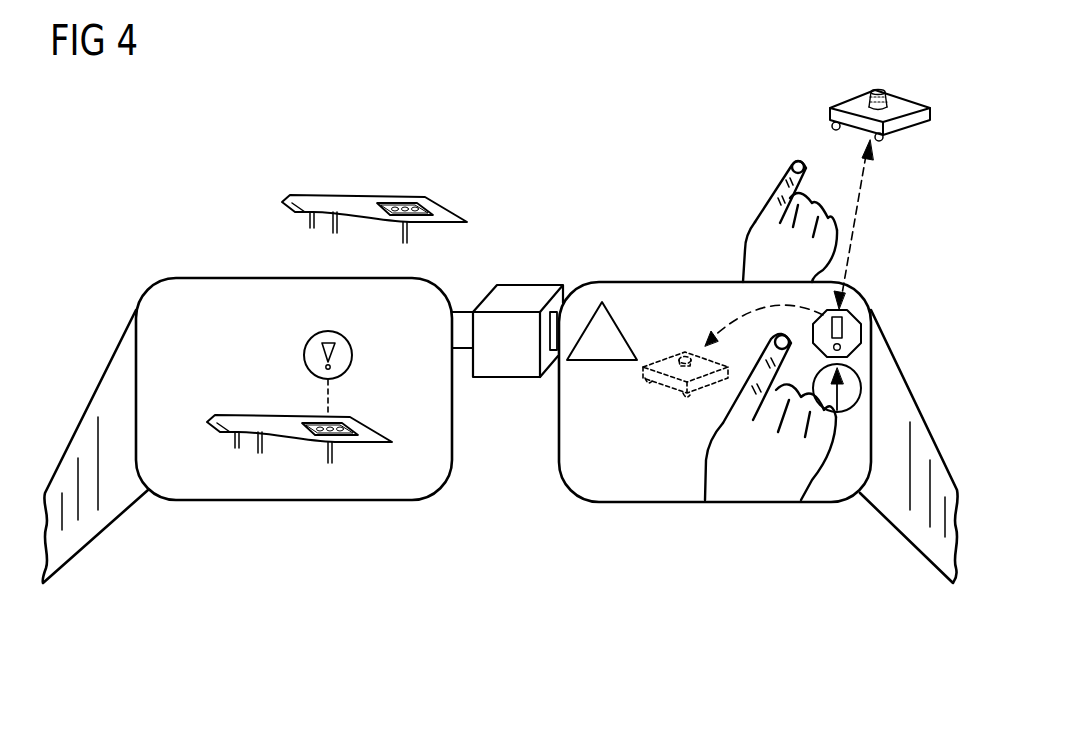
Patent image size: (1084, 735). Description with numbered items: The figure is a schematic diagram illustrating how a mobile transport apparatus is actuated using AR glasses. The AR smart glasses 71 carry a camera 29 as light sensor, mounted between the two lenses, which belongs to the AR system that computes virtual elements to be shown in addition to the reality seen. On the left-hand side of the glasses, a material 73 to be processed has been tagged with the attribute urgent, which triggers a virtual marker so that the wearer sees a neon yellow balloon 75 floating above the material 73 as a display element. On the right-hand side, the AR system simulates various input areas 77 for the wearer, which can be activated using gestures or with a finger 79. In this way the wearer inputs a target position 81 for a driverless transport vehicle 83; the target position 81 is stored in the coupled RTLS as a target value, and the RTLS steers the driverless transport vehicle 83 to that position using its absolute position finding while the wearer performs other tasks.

The camera 29 is at (522, 295).
The AR smart glasses 71 is at (504, 410).
The material 73 is at (374, 196).
The balloon 75 is at (303, 357).
The input areas 77 is at (627, 304).
The finger 79 is at (800, 158).
The target position 81 is at (676, 406).
The driverless transport vehicle 83 is at (903, 95).